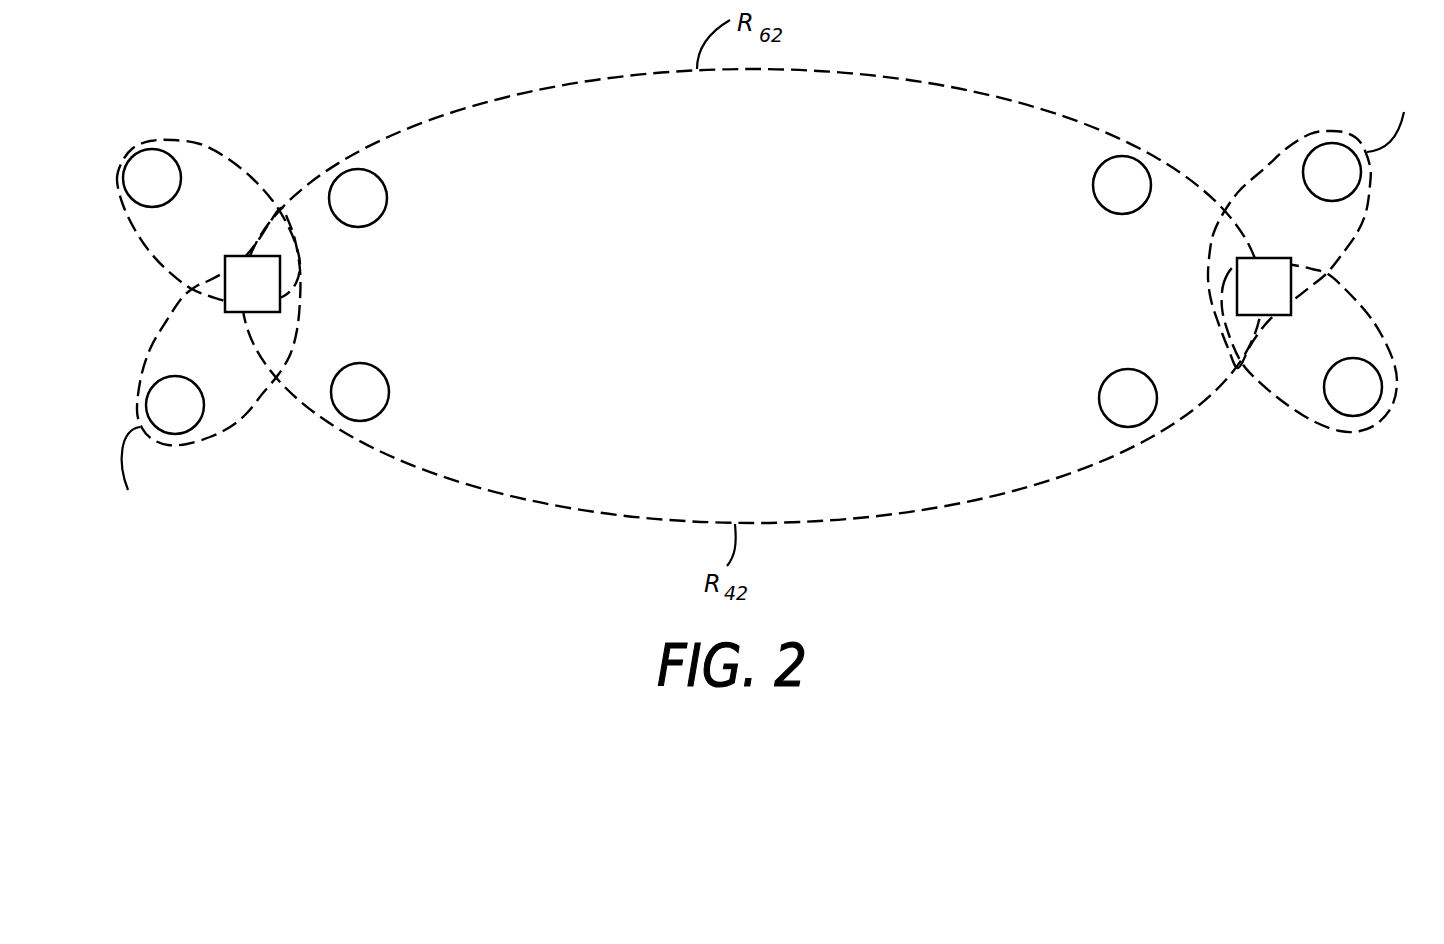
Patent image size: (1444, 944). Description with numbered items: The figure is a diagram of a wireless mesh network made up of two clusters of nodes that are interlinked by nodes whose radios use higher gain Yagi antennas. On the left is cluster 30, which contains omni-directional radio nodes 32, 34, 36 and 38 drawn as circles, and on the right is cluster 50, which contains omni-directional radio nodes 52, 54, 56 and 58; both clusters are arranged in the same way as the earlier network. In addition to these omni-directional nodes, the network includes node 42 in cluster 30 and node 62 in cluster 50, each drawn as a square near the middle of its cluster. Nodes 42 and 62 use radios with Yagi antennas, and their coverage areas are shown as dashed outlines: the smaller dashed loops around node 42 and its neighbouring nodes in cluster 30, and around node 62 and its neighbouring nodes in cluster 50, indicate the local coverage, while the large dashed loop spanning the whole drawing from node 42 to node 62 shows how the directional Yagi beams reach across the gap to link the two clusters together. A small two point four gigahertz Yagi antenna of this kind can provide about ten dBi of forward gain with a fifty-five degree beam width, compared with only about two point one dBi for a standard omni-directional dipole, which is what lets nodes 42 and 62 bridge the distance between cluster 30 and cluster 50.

The cluster 30 is at (253, 383).
The omni-directional radio node 32 is at (343, 212).
The omni-directional radio node 34 is at (160, 419).
The omni-directional radio node 36 is at (345, 406).
The omni-directional radio node 38 is at (137, 192).
The node 42 is at (252, 284).
The cluster 50 is at (1266, 362).
The omni-directional radio node 52 is at (1317, 186).
The omni-directional radio node 54 is at (1113, 412).
The omni-directional radio node 56 is at (1338, 401).
The omni-directional radio node 58 is at (1107, 199).
The node 62 is at (1249, 301).